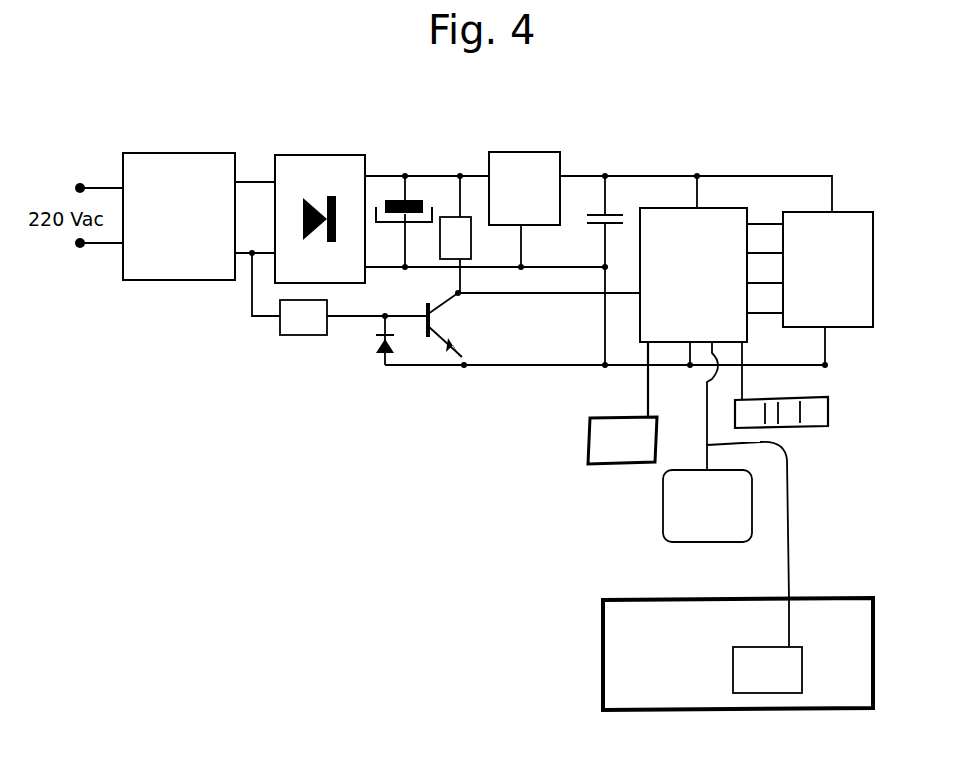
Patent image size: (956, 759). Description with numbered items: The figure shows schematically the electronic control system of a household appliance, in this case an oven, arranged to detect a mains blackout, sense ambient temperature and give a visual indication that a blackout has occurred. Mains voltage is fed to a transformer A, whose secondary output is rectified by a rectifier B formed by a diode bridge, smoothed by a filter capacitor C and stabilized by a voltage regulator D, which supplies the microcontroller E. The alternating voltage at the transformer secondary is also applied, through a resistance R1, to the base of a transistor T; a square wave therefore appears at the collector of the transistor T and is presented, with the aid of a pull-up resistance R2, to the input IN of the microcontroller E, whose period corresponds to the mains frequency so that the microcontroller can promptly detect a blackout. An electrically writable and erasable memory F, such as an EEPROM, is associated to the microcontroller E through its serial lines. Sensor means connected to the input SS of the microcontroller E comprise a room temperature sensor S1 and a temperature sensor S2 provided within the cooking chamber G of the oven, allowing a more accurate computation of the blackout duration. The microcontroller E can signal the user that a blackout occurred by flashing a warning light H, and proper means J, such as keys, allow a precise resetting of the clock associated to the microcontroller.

The transformer A is at (179, 196).
The rectifier B is at (320, 198).
The filter capacitor C is at (404, 202).
The voltage regulator D is at (524, 188).
The microcontroller E is at (693, 259).
The electrically writable and erasable memory F is at (828, 272).
The cooking chamber G is at (738, 638).
The warning light H is at (622, 403).
The clock resetting means J is at (781, 385).
The transistor T is at (606, 329).
The resistance R1 is at (340, 294).
The pull-up resistance R2 is at (455, 234).
The room temperature sensor S1 is at (707, 491).
The temperature sensor S2 is at (767, 655).